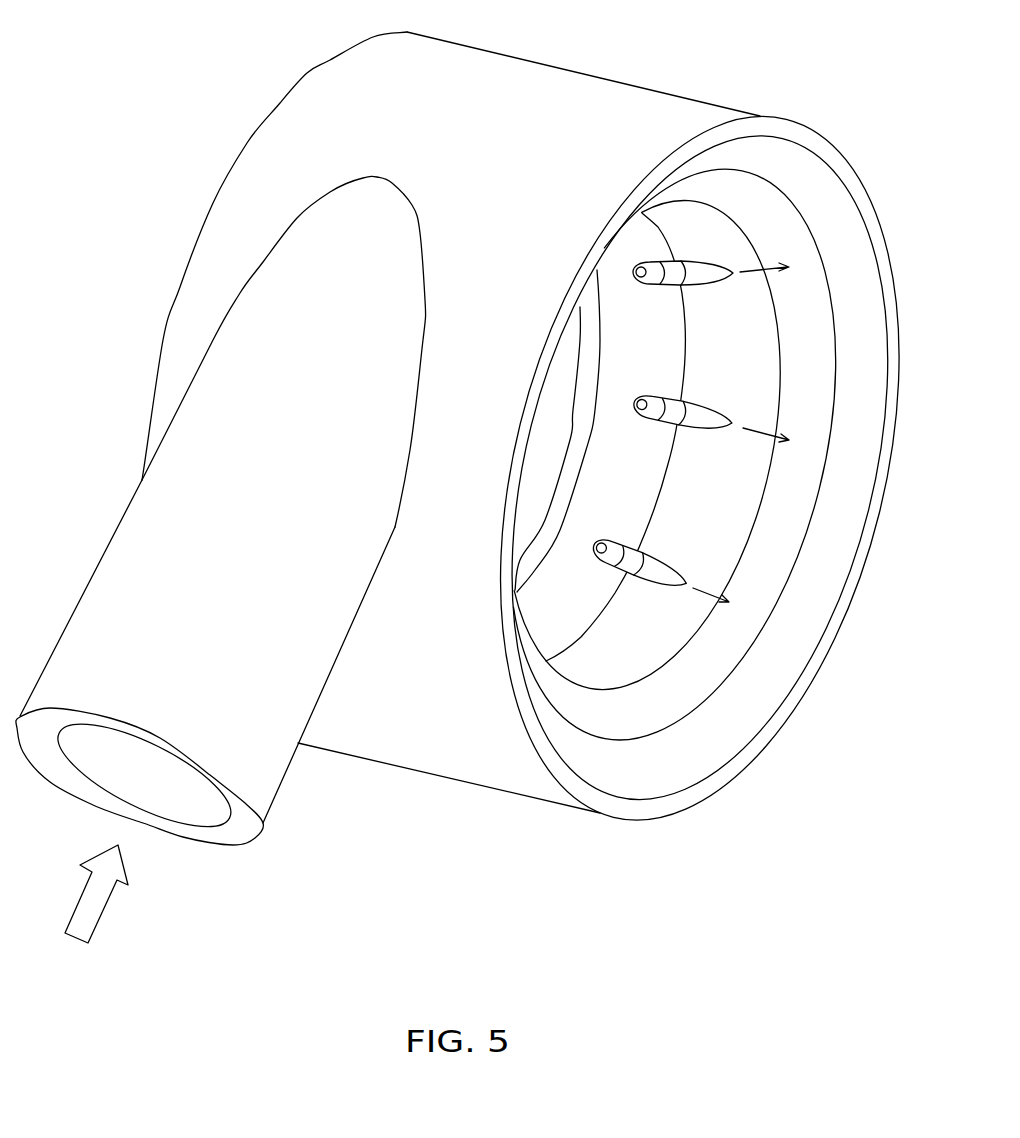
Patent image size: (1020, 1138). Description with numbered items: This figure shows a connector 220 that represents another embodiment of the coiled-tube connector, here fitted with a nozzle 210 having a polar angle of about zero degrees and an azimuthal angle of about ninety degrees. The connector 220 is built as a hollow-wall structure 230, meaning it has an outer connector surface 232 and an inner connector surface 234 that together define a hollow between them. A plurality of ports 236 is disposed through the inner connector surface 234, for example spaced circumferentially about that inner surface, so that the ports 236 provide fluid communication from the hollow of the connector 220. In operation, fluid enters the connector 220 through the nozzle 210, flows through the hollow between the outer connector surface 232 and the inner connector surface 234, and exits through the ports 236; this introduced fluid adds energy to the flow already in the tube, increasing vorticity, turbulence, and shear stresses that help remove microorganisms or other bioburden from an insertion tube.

The nozzle 210 is at (117, 530).
The connector 220 is at (121, 96).
The hollow-wall structure 230 is at (307, 72).
The outer connector surface 232 is at (563, 110).
The inner connector surface 234 is at (728, 523).
The ports 236 is at (703, 277).